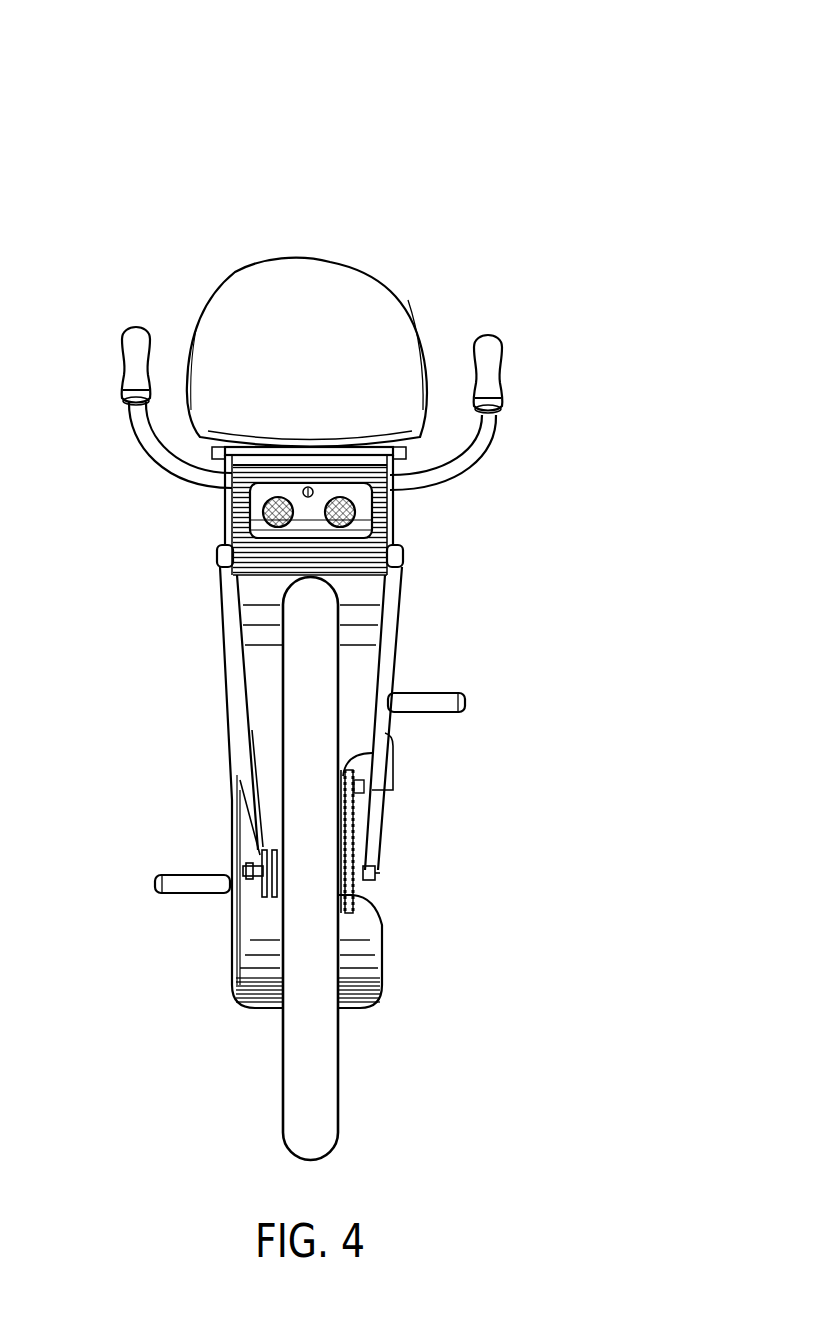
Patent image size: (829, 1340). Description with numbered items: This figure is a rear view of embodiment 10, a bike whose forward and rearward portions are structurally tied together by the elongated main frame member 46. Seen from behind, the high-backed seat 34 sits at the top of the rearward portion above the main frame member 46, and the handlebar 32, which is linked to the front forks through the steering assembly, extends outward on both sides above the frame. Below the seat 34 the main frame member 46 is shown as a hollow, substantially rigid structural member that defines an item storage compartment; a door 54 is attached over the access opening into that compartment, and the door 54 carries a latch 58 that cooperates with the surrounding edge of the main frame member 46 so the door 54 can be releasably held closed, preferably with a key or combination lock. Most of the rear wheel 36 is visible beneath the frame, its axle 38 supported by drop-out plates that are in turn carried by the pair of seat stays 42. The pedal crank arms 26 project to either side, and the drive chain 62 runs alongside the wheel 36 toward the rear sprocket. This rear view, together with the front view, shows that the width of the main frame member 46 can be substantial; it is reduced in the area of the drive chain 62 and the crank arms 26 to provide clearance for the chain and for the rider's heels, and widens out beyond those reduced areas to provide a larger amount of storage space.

The embodiment 10 is at (478, 155).
The crank arms 26 is at (400, 712).
The handlebar 32 is at (490, 433).
The high-backed seat 34 is at (335, 293).
The rear wheel 36 is at (338, 1070).
The axle 38 is at (380, 873).
The seat stays 42 is at (235, 638).
The main frame member 46 is at (343, 567).
The door 54 is at (355, 495).
The latch 58 is at (302, 492).
The drive chain 62 is at (353, 803).